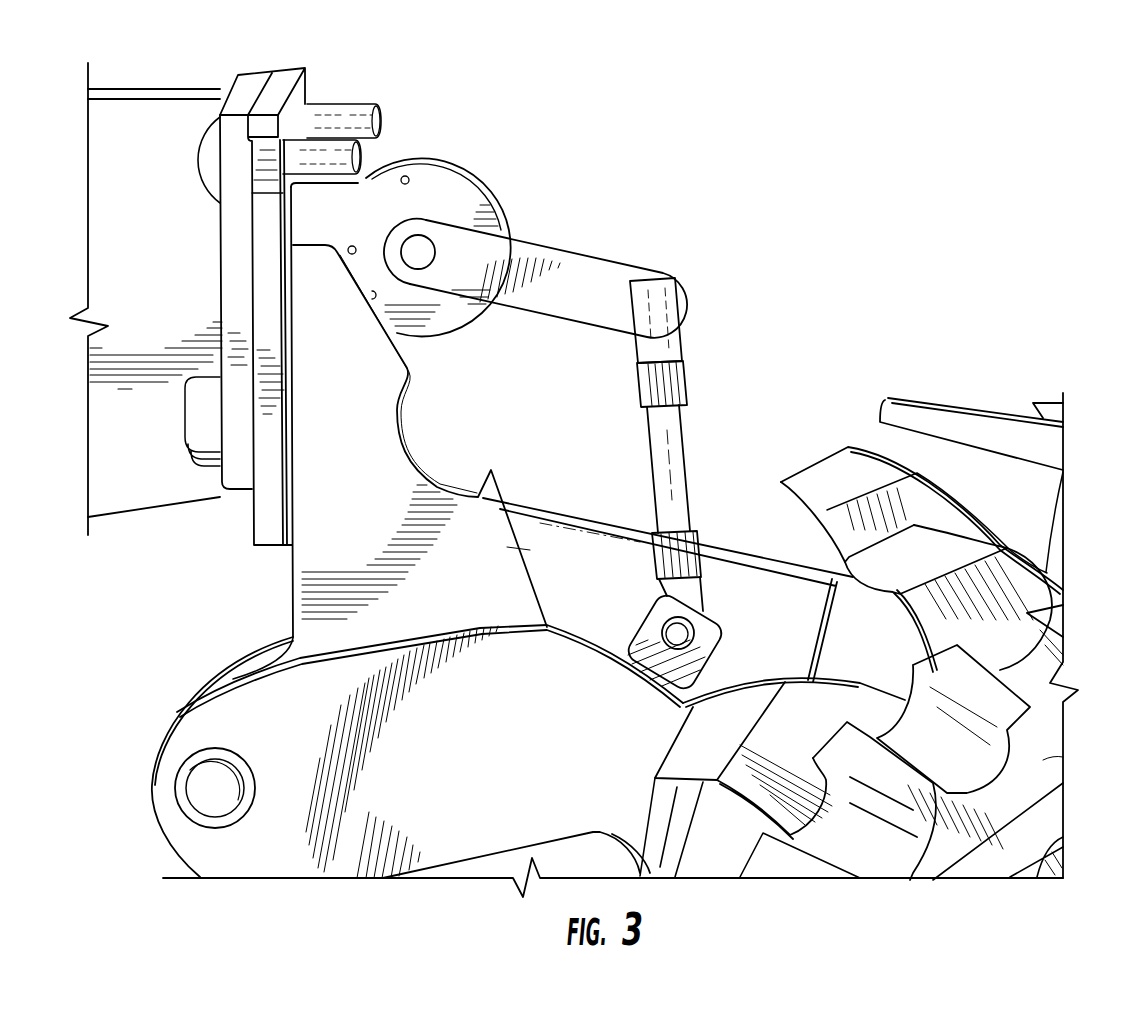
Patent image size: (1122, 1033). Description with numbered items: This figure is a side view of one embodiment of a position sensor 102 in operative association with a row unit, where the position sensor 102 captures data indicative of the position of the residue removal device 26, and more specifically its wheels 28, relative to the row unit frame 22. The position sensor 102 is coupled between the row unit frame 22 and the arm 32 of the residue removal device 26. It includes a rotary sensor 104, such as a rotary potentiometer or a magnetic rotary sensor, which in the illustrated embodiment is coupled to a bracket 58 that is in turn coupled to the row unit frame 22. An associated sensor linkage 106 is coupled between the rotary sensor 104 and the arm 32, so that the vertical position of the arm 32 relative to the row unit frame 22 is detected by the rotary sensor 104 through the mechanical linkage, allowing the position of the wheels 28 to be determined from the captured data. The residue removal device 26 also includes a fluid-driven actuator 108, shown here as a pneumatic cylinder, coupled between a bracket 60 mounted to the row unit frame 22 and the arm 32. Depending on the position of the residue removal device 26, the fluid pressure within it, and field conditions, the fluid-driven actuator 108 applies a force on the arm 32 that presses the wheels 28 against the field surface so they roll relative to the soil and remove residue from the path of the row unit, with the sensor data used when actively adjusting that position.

The row unit frame 22 is at (184, 92).
The residue removal device 26 is at (820, 343).
The wheels 28 is at (940, 830).
The arm 32 is at (416, 806).
The bracket 58 is at (323, 242).
The bracket 60 is at (330, 556).
The position sensor 102 is at (582, 173).
The rotary sensor 104 is at (445, 168).
The sensor linkage 106 is at (630, 258).
The fluid-driven actuator 108 is at (567, 530).